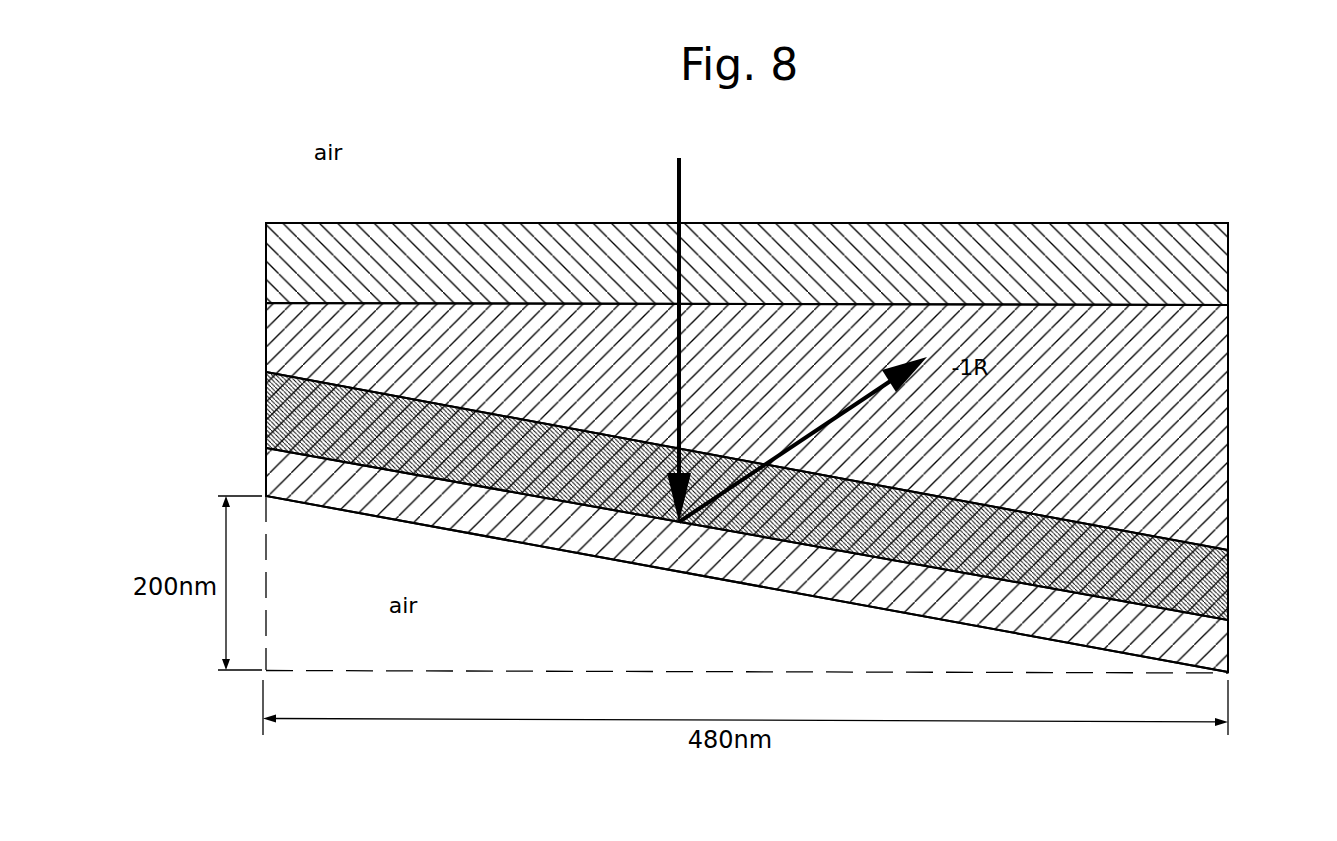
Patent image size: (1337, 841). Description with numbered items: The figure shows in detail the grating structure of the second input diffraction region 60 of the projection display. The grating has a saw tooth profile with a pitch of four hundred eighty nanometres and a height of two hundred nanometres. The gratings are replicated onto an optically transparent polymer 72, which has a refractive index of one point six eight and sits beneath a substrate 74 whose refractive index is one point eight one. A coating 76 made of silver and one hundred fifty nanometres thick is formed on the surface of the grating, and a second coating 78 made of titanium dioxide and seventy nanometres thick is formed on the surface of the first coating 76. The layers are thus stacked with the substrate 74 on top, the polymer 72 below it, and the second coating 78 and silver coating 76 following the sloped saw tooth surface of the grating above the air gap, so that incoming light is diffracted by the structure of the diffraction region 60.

The input diffraction region 60 is at (489, 190).
The optically transparent polymer 72 is at (1200, 383).
The substrate 74 is at (1213, 268).
The coating 76 is at (1217, 652).
The second coating 78 is at (1210, 585).